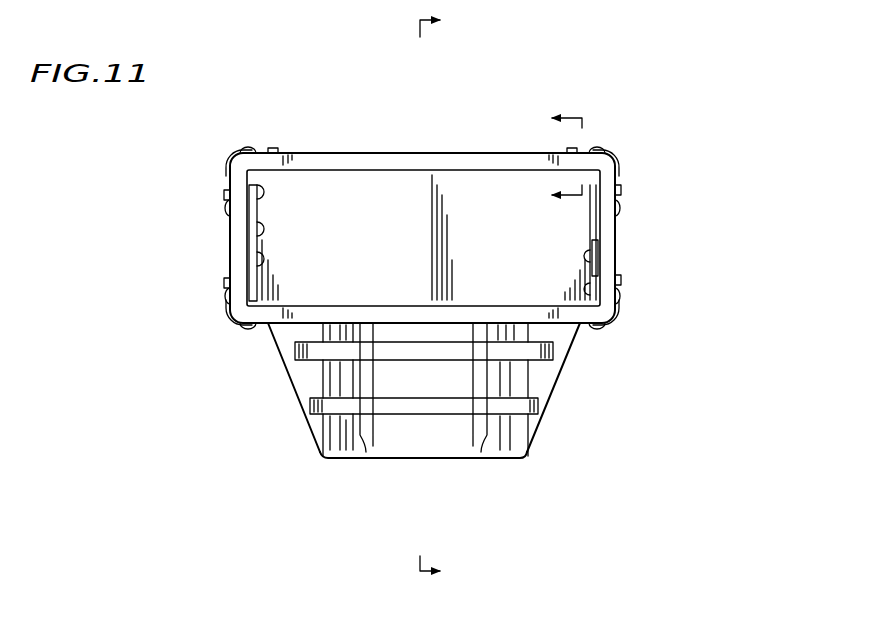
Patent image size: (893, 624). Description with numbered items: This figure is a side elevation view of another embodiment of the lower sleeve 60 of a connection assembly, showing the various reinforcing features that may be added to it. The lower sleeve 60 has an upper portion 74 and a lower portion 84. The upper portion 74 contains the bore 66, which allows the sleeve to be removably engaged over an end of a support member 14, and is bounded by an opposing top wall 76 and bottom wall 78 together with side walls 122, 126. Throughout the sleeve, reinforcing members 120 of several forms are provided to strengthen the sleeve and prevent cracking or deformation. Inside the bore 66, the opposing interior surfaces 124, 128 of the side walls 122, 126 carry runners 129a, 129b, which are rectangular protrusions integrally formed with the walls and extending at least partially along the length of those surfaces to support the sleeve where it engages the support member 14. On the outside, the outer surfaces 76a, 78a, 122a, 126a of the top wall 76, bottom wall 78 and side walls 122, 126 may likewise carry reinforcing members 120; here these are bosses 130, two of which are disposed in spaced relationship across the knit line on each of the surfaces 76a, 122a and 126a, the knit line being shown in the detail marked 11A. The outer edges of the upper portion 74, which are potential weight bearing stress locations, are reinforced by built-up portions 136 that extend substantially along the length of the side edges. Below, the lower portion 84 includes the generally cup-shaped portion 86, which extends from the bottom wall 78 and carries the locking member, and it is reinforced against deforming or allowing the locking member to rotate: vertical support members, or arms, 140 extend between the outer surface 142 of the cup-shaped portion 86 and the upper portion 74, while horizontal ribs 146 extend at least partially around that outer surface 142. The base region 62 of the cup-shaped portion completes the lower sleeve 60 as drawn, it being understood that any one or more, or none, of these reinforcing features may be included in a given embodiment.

The lower sleeve 60 is at (582, 78).
The bore 66 is at (483, 172).
The top wall 76 is at (345, 154).
The outer surface of top wall 76a is at (397, 153).
The upper portion 74 is at (722, 128).
The built-up portion 136 is at (232, 152).
The boss 130 is at (279, 150).
The reinforcing member 120 is at (270, 148).
The interior surface 124 is at (226, 192).
The outer surface of side wall 122a is at (232, 210).
The runner 129a is at (255, 228).
The side wall 122 is at (240, 297).
The bottom wall 78 is at (445, 316).
The runner 129b is at (600, 253).
The outer surface of side wall 126a is at (616, 250).
The interior surface 128 is at (602, 272).
The side wall 126 is at (608, 289).
The section line 11A is at (539, 156).
The support member 14 is at (449, 293).
The lower portion 84 is at (265, 404).
The cup-shaped portion 86 is at (583, 445).
The base 62 is at (326, 459).
The outer surface of bottom wall 78a is at (590, 333).
The horizontal rib 146 is at (548, 352).
The vertical support member 140 is at (372, 437).
The outer surface of cup-shaped portion 142 is at (432, 440).